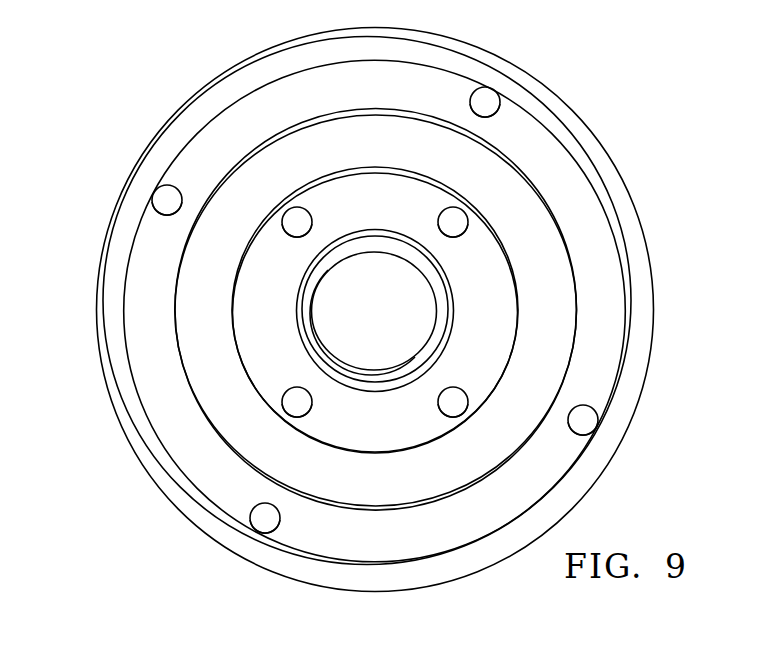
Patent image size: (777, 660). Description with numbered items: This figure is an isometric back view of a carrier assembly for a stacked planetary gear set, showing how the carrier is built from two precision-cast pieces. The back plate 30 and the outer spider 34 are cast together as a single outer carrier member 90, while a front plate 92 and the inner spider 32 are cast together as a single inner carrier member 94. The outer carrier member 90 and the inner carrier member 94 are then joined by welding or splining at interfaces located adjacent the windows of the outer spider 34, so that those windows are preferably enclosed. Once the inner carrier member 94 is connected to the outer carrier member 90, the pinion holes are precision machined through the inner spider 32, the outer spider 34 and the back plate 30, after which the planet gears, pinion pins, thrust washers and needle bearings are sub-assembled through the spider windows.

The back plate 30 is at (473, 175).
The inner spider 32 is at (258, 347).
The outer spider 34 is at (450, 523).
The outer carrier member 90 is at (624, 180).
The front plate 92 is at (495, 298).
The inner carrier member 94 is at (517, 320).